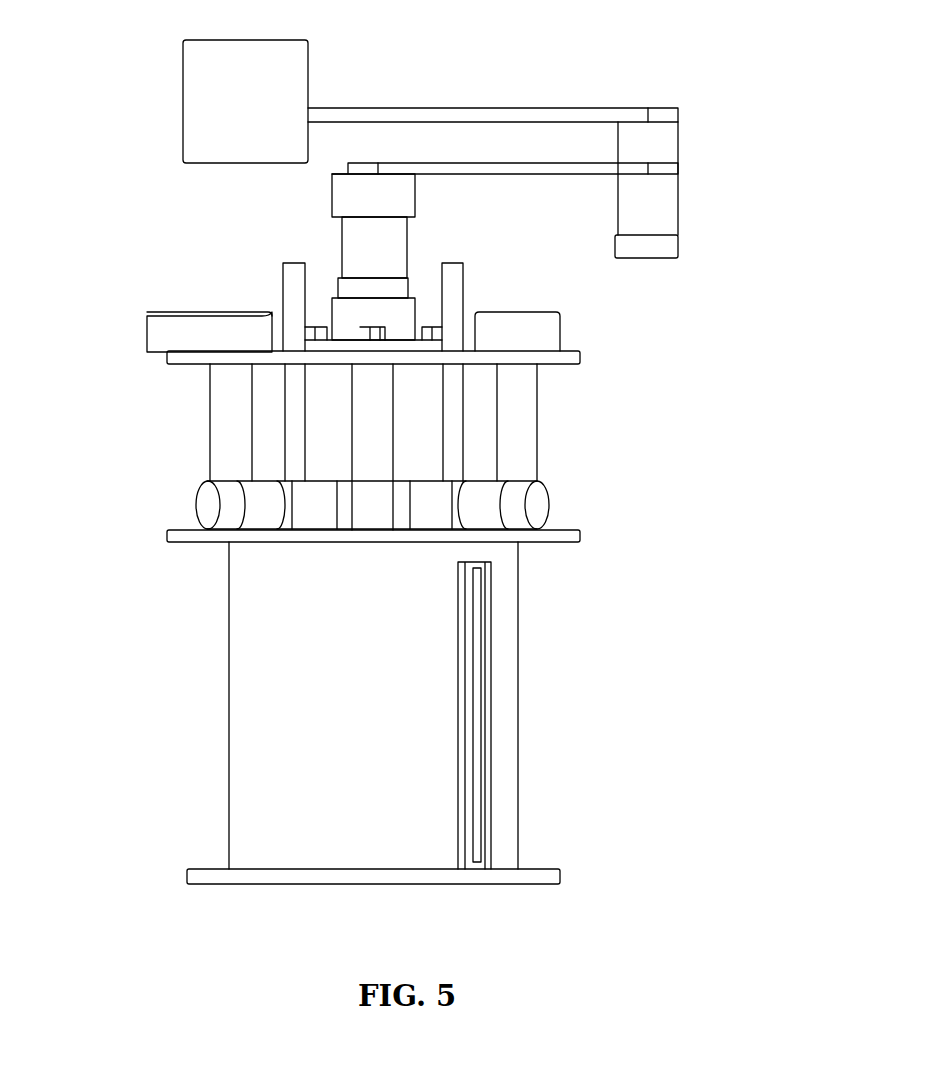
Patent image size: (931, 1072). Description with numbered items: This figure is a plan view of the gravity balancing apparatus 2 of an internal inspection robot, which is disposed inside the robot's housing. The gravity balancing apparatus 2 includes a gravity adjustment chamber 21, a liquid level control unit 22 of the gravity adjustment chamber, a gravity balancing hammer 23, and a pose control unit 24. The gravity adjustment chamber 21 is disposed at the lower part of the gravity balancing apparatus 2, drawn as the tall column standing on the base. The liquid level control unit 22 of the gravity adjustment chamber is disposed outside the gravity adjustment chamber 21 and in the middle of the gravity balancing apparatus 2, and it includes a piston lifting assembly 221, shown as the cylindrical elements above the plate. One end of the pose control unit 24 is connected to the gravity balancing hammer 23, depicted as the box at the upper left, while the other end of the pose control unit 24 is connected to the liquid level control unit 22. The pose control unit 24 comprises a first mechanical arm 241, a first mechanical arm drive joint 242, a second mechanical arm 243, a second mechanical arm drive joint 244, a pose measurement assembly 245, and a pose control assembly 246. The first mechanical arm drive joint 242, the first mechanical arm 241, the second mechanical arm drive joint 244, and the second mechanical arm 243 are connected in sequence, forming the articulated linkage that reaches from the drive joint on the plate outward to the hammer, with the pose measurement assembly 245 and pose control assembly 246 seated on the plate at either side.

The gravity balancing apparatus 2 is at (163, 537).
The gravity adjustment chamber 21 is at (213, 763).
The liquid level control unit of the gravity adjustment chamber 22 is at (528, 502).
The piston lifting assembly 221 is at (438, 497).
The gravity balancing hammer 23 is at (273, 75).
The pose control unit 24 is at (695, 247).
The first mechanical arm 241 is at (492, 177).
The first mechanical arm drive joint 242 is at (360, 238).
The second mechanical arm 243 is at (402, 113).
The second mechanical arm drive joint 244 is at (648, 212).
The pose measurement assembly 245 is at (517, 343).
The pose control assembly 246 is at (188, 327).